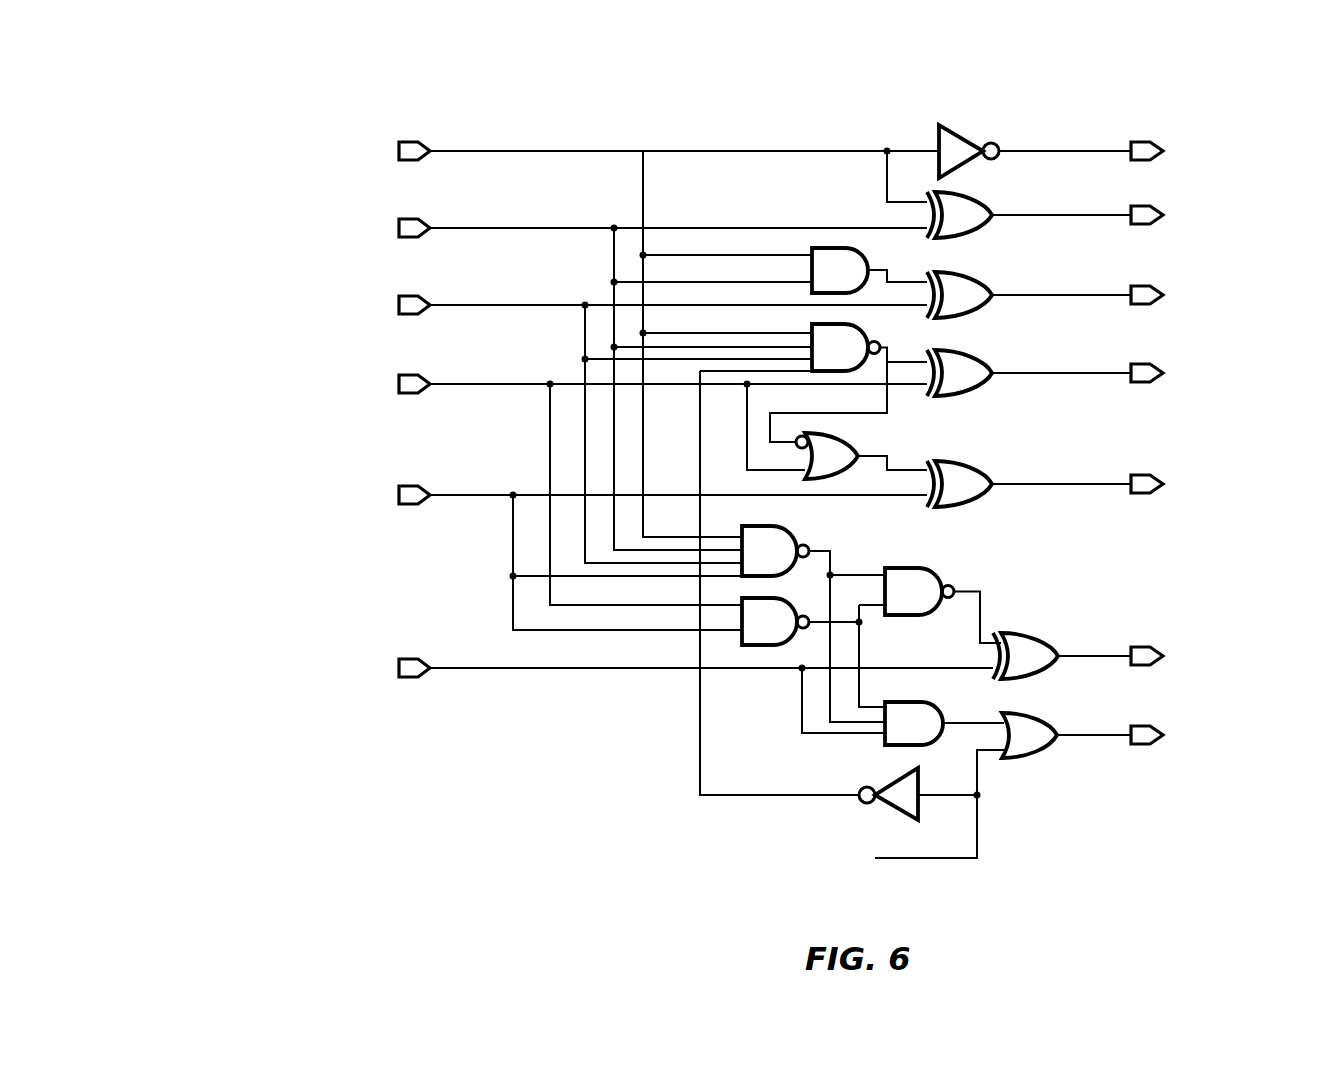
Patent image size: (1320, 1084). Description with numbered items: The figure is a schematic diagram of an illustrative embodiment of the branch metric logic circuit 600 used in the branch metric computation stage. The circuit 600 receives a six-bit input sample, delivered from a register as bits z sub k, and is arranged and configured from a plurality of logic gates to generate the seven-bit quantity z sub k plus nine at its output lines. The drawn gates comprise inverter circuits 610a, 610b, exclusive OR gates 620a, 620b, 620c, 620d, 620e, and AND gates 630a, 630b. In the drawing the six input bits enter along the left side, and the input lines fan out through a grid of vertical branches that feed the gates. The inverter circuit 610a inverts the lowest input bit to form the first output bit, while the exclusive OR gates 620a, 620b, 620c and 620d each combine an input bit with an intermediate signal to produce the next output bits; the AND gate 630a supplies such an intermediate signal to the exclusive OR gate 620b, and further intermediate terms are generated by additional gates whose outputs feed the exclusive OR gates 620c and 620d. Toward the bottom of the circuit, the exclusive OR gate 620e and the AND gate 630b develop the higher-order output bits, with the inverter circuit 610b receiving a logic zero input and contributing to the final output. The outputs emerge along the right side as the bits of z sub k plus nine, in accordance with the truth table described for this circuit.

The branch metric logic circuit 600 is at (232, 197).
The inverter circuit 610a is at (952, 140).
The inverter circuit 610b is at (898, 800).
The exclusive OR gate 620a is at (952, 206).
The exclusive OR gate 620b is at (952, 284).
The exclusive OR gate 620c is at (952, 364).
The exclusive OR gate 620d is at (952, 472).
The exclusive OR gate 620e is at (1032, 648).
The AND gate 630a is at (845, 270).
The AND gate 630b is at (915, 718).